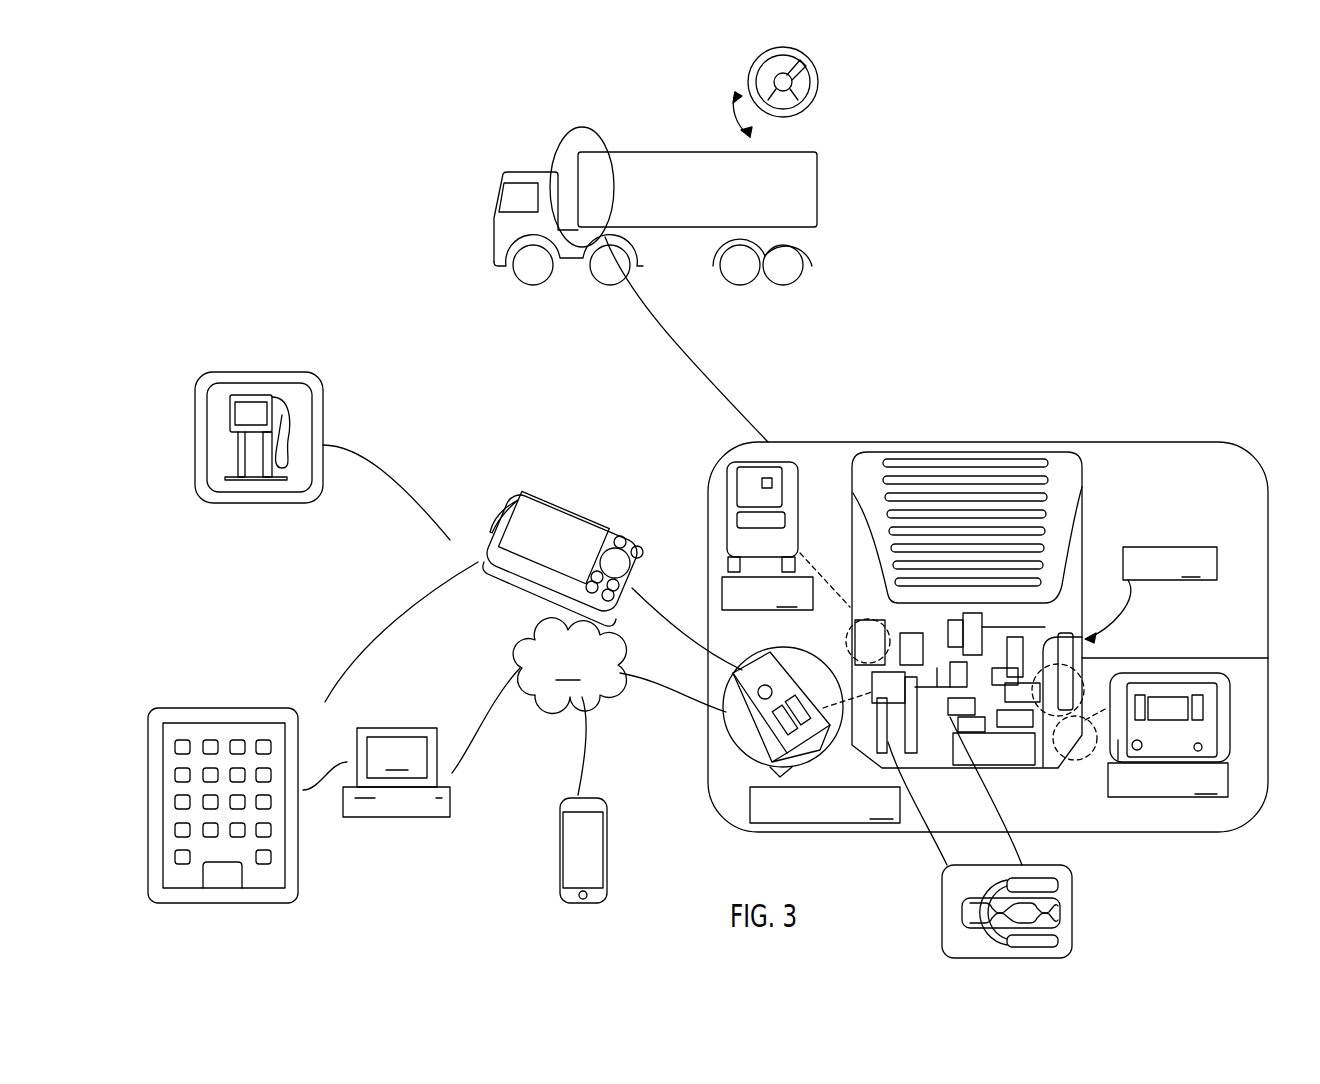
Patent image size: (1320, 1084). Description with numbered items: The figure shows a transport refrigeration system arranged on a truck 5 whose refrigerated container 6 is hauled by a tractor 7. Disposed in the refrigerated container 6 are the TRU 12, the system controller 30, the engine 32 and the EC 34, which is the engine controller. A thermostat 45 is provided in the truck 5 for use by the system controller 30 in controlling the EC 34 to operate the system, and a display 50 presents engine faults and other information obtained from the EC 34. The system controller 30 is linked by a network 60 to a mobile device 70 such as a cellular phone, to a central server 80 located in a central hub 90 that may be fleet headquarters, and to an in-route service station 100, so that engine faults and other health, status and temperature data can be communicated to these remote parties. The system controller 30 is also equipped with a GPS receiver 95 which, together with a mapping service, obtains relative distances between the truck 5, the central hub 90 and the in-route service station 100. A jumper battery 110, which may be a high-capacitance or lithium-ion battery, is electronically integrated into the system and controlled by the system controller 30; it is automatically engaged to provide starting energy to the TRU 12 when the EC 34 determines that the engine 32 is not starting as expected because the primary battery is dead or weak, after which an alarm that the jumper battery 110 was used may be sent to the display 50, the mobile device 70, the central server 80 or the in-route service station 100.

The truck 5 is at (496, 84).
The refrigerated container 6 is at (665, 152).
The tractor 7 is at (494, 190).
The TRU 12 is at (1000, 492).
The system controller 30 is at (790, 787).
The engine 32 is at (1004, 633).
The EC 34 is at (783, 480).
The thermostat 45 is at (818, 88).
The display 50 is at (1169, 735).
The network 60 is at (539, 706).
The mobile device 70 is at (607, 870).
The central server 80 is at (376, 772).
The central hub 90 is at (280, 905).
The GPS receiver 95 is at (490, 518).
The in-route service station 100 is at (200, 447).
The jumper battery 110 is at (1072, 900).